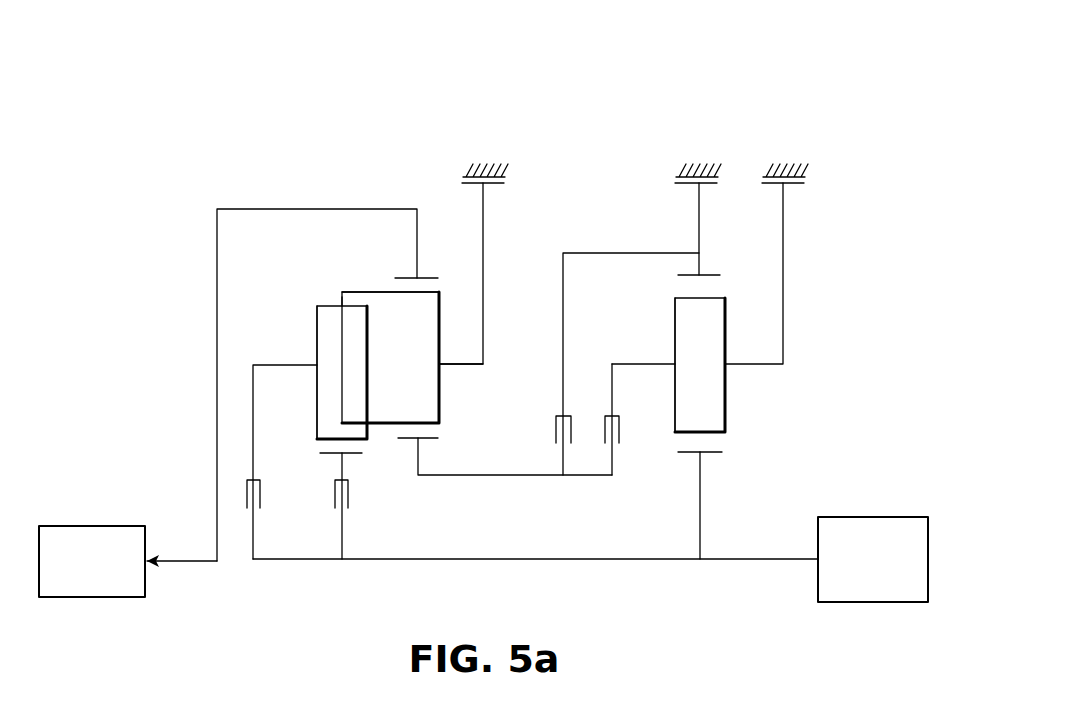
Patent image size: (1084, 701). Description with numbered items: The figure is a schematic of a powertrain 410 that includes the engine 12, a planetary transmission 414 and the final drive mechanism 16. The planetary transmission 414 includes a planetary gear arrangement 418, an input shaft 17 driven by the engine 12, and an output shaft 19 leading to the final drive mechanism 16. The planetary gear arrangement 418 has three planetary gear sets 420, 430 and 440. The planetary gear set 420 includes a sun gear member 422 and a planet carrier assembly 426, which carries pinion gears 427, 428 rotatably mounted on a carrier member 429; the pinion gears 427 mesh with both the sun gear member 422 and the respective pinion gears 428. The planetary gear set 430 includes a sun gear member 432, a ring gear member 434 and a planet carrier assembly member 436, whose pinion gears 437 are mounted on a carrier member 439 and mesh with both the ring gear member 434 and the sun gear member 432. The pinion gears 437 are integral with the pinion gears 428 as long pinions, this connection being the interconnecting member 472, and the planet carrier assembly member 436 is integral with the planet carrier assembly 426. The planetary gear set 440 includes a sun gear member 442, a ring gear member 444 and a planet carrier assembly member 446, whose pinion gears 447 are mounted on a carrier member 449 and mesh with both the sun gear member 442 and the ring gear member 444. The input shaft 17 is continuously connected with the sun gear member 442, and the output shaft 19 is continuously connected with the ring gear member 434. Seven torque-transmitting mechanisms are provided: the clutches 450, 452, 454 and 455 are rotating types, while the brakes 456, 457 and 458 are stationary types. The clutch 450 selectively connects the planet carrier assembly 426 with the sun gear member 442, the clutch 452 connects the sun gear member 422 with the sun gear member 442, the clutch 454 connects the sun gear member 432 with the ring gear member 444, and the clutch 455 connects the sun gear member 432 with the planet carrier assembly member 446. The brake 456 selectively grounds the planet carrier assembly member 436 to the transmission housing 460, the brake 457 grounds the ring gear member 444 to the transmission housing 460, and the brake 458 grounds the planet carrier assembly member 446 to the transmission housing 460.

The engine 12 is at (853, 499).
The final drive mechanism 16 is at (107, 509).
The input shaft 17 is at (778, 560).
The output shaft 19 is at (187, 562).
The powertrain 410 is at (144, 311).
The planetary transmission 414 is at (437, 106).
The planetary gear arrangement 418 is at (674, 104).
The planetary gear set 420 is at (339, 463).
The sun gear member 422 is at (327, 458).
The planet carrier assembly 426 is at (311, 351).
The pinion gears 427 is at (342, 372).
The pinion gears 428 is at (341, 297).
The carrier member 429 is at (280, 364).
The planetary gear set 430 is at (428, 446).
The sun gear member 432 is at (407, 441).
The ring gear member 434 is at (430, 276).
The planet carrier assembly member 436 is at (453, 373).
The pinion gears 437 is at (390, 357).
The carrier member 439 is at (478, 366).
The planetary gear set 440 is at (690, 459).
The sun gear member 442 is at (716, 455).
The ring gear member 444 is at (712, 273).
The planet carrier assembly member 446 is at (662, 351).
The pinion gears 447 is at (700, 365).
The carrier member 449 is at (650, 362).
The clutch 450 is at (266, 513).
The clutch 452 is at (353, 513).
The clutch 454 is at (554, 448).
The clutch 455 is at (601, 448).
The brake 456 is at (509, 175).
The brake 457 is at (672, 175).
The brake 458 is at (810, 175).
The transmission housing 460 is at (470, 174).
The interconnecting member 472 is at (356, 291).